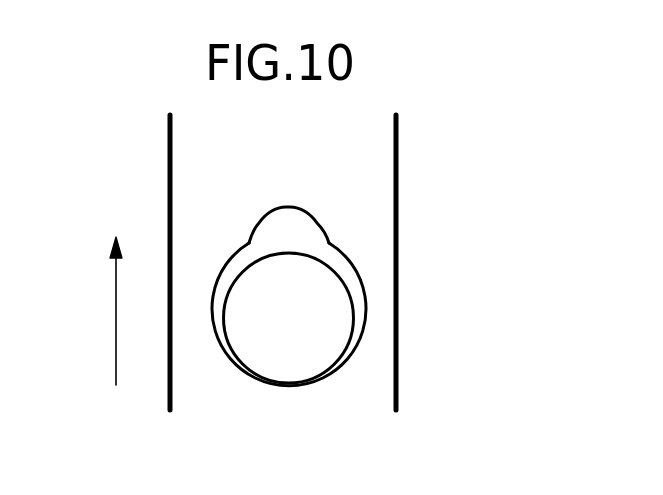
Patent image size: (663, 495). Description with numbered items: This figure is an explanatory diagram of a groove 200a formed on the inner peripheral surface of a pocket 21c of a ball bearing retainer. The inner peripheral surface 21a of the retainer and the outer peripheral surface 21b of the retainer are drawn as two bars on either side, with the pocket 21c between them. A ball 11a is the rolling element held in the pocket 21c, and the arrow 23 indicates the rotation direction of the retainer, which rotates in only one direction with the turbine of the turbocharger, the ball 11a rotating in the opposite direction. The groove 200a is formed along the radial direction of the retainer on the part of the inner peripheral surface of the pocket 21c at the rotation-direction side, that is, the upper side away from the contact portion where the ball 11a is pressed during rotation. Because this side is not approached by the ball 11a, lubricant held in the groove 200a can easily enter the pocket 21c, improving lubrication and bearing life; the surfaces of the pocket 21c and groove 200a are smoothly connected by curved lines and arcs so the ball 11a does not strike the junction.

The inner peripheral surface of the retainer 21a is at (168, 153).
The outer peripheral surface of the retainer 21b is at (398, 151).
The pocket 21c is at (227, 353).
The groove 200a is at (288, 207).
The ball 11a is at (355, 327).
The arrow 23 is at (116, 310).